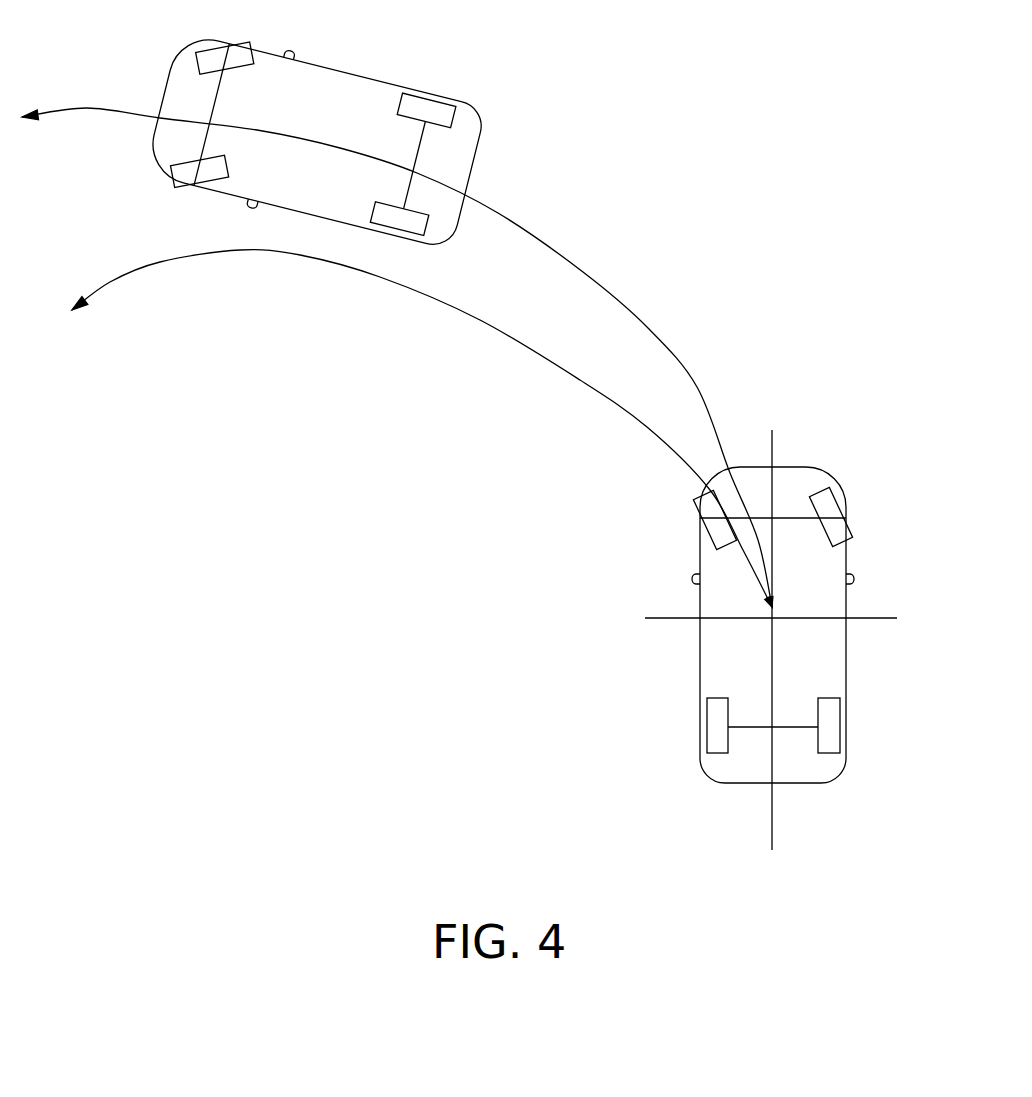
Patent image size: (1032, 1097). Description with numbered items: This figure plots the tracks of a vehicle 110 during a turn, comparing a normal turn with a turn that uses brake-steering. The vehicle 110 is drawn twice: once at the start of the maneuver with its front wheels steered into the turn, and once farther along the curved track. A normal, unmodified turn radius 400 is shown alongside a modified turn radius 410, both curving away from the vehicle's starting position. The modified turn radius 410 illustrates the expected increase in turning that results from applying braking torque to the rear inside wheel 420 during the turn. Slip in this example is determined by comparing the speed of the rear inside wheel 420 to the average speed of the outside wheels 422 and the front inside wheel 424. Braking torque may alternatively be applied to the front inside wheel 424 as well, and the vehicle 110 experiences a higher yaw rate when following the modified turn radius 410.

The vehicle 110 is at (362, 78).
The normal turn radius 400 is at (583, 272).
The modified turn radius 410 is at (163, 262).
The rear inside wheel 420 is at (715, 733).
The outside wheels 422 is at (827, 502).
The front inside wheel 424 is at (697, 510).